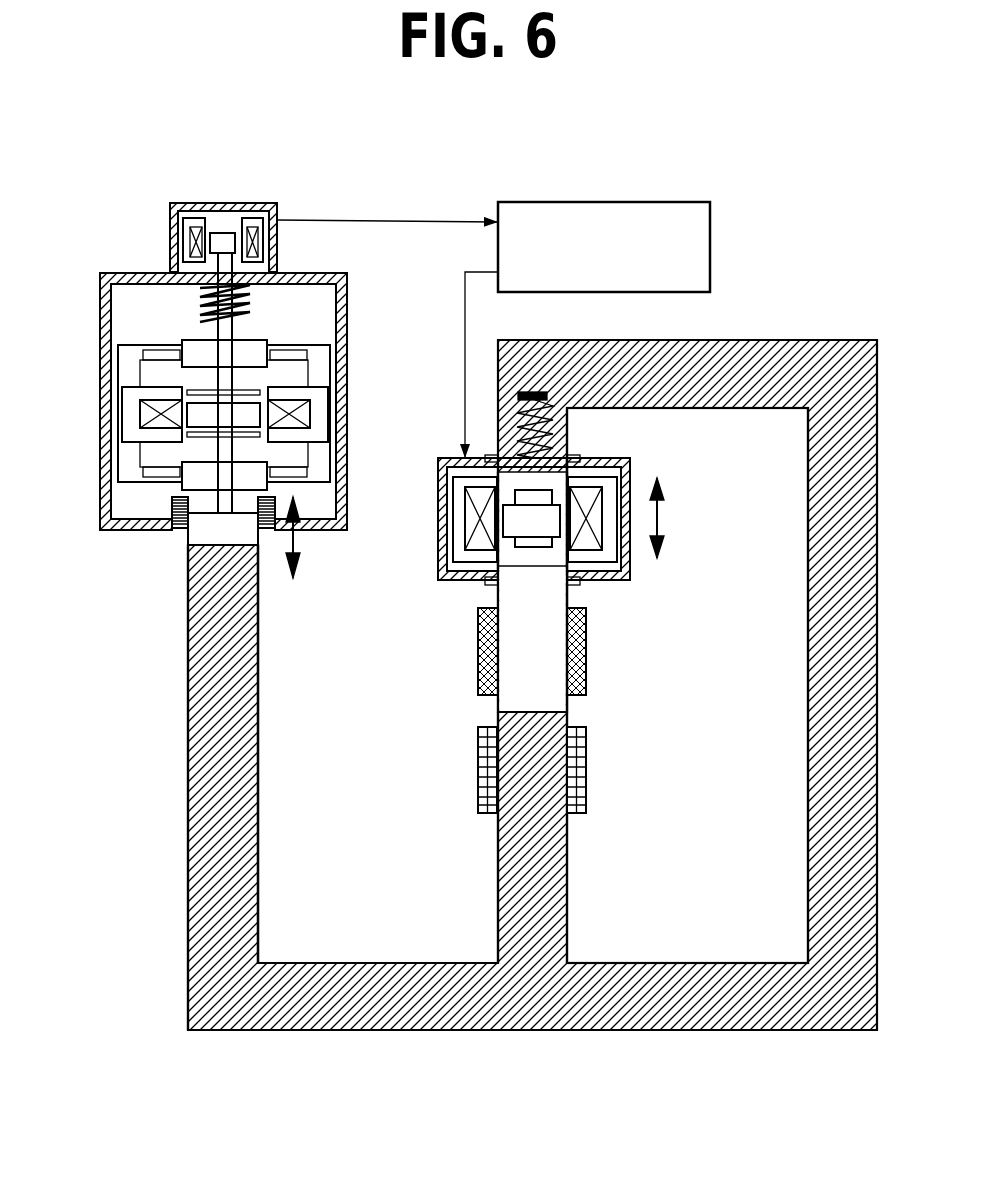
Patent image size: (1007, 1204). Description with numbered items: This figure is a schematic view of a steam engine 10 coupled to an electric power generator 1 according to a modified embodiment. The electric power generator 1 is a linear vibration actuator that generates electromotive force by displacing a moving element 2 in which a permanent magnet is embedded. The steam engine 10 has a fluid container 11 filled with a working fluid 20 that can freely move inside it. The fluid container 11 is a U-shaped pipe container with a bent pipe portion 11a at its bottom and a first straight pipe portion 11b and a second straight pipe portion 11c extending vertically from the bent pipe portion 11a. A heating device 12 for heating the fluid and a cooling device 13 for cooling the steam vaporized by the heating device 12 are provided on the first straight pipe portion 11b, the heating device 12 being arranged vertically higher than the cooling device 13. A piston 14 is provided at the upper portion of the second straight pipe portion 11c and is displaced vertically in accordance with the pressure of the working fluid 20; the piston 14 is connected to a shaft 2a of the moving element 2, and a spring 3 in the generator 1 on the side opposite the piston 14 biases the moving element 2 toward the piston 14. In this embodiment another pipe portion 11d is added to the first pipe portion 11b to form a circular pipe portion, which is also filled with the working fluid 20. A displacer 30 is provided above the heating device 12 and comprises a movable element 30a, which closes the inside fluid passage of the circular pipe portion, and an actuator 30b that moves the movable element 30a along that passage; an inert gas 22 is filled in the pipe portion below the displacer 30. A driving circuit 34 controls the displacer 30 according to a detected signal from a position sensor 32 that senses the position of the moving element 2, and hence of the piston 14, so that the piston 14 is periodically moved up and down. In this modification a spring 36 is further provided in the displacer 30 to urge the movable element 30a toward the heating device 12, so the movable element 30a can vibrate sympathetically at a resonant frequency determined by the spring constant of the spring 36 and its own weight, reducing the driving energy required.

The electric power generator 1 is at (84, 341).
The moving element 2 is at (256, 383).
The shaft 2a is at (223, 453).
The spring 3 is at (257, 288).
The steam engine 10 is at (464, 685).
The fluid container 11 is at (187, 815).
The bent pipe portion 11a is at (365, 963).
The first straight pipe portion 11b is at (498, 860).
The second straight pipe portion 11c is at (262, 858).
The pipe portion 11d is at (808, 850).
The heating device 12 is at (586, 628).
The cooling device 13 is at (586, 762).
The piston 14 is at (207, 535).
The working fluid 20 is at (223, 920).
The inert gas 22 is at (548, 660).
The displacer 30 is at (534, 542).
The movable element 30a is at (517, 522).
The actuator 30b is at (610, 562).
The position sensor 32 is at (170, 222).
The driving circuit 34 is at (712, 236).
The spring 36 is at (568, 422).